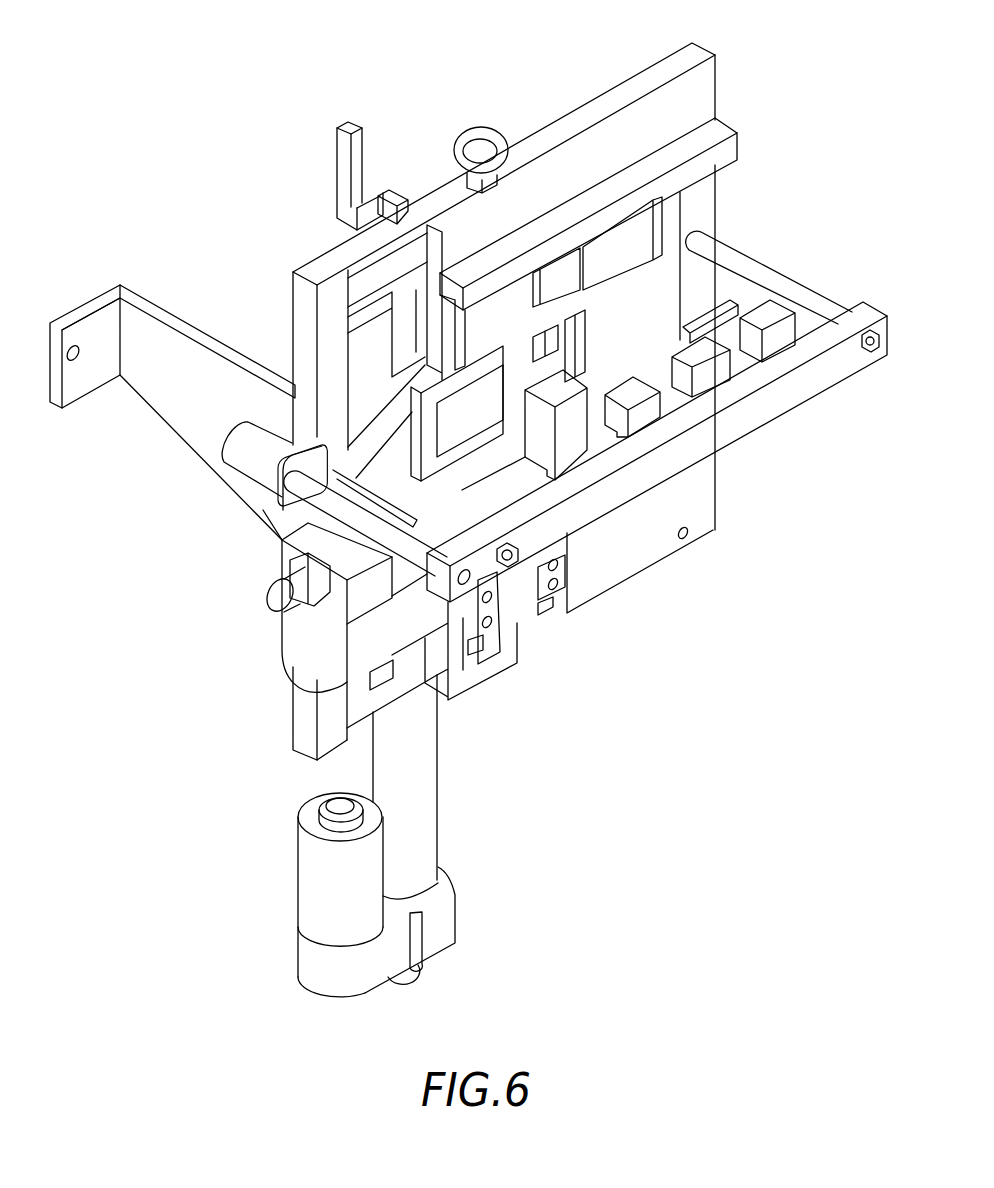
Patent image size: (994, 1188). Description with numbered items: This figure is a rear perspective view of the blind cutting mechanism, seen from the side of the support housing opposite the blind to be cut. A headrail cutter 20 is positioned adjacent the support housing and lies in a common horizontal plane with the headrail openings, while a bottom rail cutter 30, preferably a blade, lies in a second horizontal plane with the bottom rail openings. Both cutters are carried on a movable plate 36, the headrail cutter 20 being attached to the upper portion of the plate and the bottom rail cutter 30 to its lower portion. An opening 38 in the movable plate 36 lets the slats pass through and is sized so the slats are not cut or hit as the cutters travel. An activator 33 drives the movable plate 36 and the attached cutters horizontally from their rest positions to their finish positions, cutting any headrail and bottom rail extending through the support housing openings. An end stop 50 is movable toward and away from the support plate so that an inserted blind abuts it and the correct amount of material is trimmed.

The headrail cutter 20 is at (455, 345).
The bottom rail cutter 30 is at (455, 420).
The activator 33 is at (473, 503).
The movable plate 36 is at (665, 285).
The opening 38 is at (572, 350).
The end stop 50 is at (777, 338).